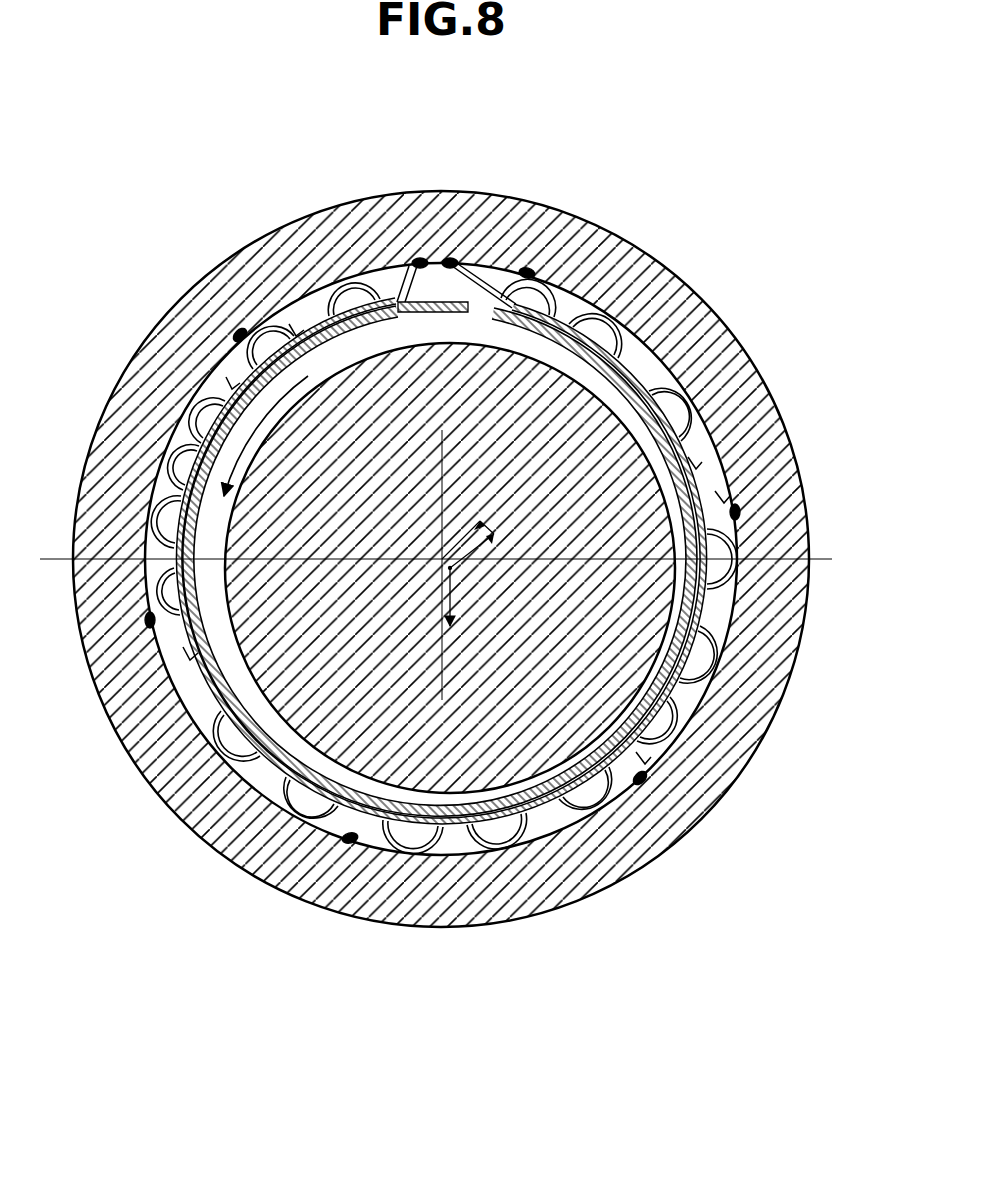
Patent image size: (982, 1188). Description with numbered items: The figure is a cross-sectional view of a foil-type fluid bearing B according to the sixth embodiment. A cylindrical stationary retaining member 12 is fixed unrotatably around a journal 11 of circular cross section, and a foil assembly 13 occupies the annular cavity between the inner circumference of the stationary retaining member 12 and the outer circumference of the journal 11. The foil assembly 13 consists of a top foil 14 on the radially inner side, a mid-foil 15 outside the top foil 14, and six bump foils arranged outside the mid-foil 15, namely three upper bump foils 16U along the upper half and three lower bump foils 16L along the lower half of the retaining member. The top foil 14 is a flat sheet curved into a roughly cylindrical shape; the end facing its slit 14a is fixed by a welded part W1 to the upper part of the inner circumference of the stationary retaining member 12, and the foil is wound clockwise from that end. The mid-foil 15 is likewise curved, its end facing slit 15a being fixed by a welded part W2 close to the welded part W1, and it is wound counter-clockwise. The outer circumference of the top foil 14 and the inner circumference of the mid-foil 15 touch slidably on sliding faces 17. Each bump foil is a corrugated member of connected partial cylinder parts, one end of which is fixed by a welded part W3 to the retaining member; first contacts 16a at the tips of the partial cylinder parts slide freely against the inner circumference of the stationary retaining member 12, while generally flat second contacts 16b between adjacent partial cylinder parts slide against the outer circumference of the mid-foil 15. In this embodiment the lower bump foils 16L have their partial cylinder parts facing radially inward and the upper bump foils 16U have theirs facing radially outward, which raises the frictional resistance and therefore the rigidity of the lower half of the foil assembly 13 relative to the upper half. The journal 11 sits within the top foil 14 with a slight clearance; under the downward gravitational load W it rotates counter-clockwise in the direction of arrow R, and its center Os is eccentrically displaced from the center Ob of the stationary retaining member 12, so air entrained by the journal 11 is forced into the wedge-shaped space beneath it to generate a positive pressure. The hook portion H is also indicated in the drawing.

The stationary retaining member 12 is at (245, 262).
The journal 11 is at (462, 462).
The foil assembly 13 is at (690, 428).
The top foil 14 is at (200, 638).
The slit 14a is at (466, 314).
The mid-foil 15 is at (640, 385).
The slit 15a is at (505, 290).
The first contacts 16a is at (338, 272).
The second contacts 16b is at (568, 302).
The upper bump foils 16U is at (378, 266).
The lower bump foils 16L is at (712, 660).
The sliding faces 17 is at (368, 780).
The welded part W1 is at (452, 258).
The welded part W2 is at (420, 256).
The welded part W3 is at (533, 266).
The fluid bearing B is at (684, 230).
The hook portion H is at (745, 520).
The center of the stationary retaining member Ob is at (442, 559).
The center of the journal Os is at (450, 568).
The load W is at (460, 618).
The arrow R is at (255, 458).